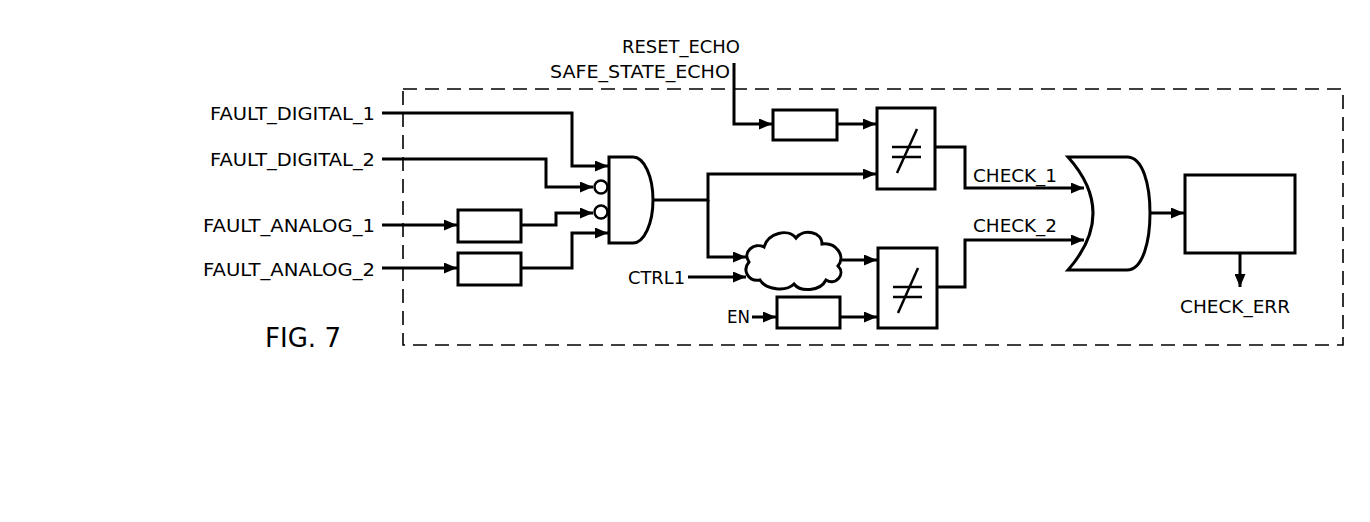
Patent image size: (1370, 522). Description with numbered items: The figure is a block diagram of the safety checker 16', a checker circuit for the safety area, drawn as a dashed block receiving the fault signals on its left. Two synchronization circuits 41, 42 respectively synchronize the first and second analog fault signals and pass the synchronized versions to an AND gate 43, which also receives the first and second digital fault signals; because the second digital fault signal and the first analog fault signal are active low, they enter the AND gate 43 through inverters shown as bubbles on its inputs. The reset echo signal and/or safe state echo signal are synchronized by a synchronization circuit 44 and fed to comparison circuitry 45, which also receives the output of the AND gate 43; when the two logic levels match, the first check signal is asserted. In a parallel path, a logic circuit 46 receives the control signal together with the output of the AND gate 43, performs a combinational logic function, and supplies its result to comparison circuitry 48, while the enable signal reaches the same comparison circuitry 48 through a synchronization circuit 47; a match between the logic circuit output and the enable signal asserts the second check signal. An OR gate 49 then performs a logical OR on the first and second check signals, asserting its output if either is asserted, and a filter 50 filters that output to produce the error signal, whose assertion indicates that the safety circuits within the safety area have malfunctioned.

The safety checker 16' is at (851, 191).
The synchronization circuit 41 is at (458, 210).
The synchronization circuit 42 is at (500, 285).
The AND gate 43 is at (624, 200).
The synchronization circuit 44 is at (787, 108).
The comparison circuitry 45 is at (910, 108).
The logic circuit 46 is at (752, 280).
The synchronization circuit 47 is at (805, 328).
The comparison circuitry 48 is at (905, 328).
The OR gate 49 is at (1109, 213).
The filter 50 is at (1217, 175).